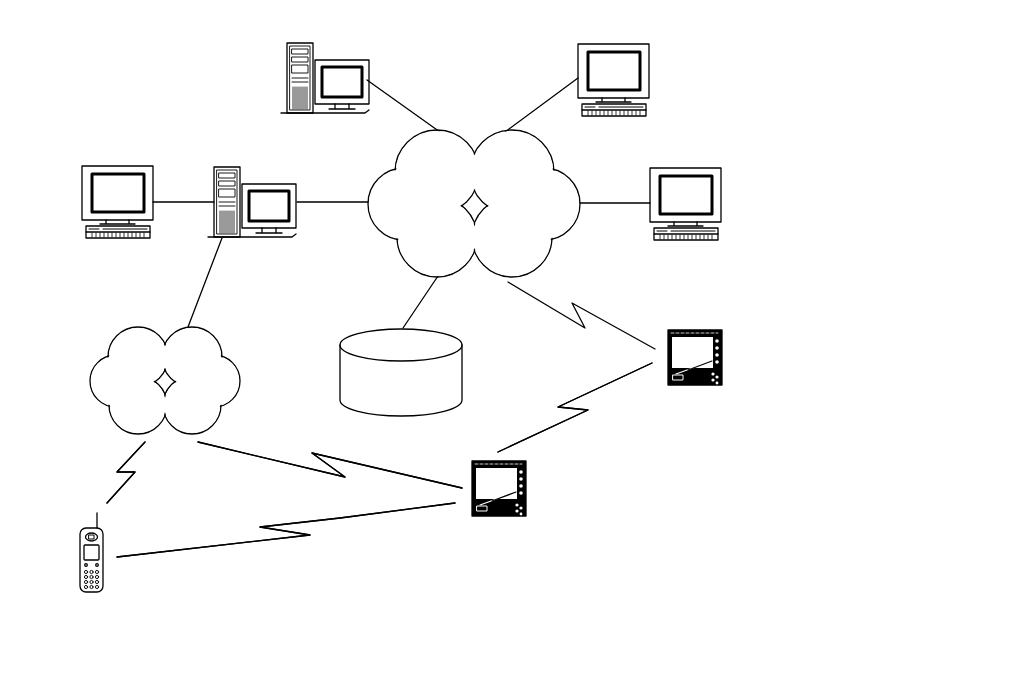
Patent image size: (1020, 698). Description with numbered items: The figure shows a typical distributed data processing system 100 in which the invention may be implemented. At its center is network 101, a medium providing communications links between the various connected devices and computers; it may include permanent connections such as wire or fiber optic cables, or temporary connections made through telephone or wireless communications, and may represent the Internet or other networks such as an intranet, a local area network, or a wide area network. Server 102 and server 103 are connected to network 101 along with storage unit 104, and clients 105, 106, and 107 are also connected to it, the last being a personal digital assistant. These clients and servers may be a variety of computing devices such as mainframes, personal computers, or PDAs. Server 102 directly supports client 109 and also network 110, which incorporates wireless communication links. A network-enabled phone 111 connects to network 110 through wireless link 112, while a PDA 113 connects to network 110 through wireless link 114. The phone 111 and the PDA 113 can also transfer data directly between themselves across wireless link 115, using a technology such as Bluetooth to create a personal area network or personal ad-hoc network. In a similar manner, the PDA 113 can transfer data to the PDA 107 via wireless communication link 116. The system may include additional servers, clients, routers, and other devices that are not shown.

The distributed data processing system 100 is at (148, 92).
The network 101 is at (460, 226).
The server 102 is at (226, 167).
The server 103 is at (287, 83).
The storage unit 104 is at (339, 378).
The client 105 is at (652, 80).
The client 106 is at (723, 203).
The personal digital assistant 107 is at (723, 350).
The client 109 is at (117, 165).
The network 110 is at (151, 399).
The network-enabled phone 111 is at (105, 573).
The wireless link 112 is at (125, 492).
The personal digital assistant 113 is at (525, 487).
The wireless link 114 is at (245, 452).
The wireless link 115 is at (223, 545).
The wireless communication link 116 is at (550, 423).